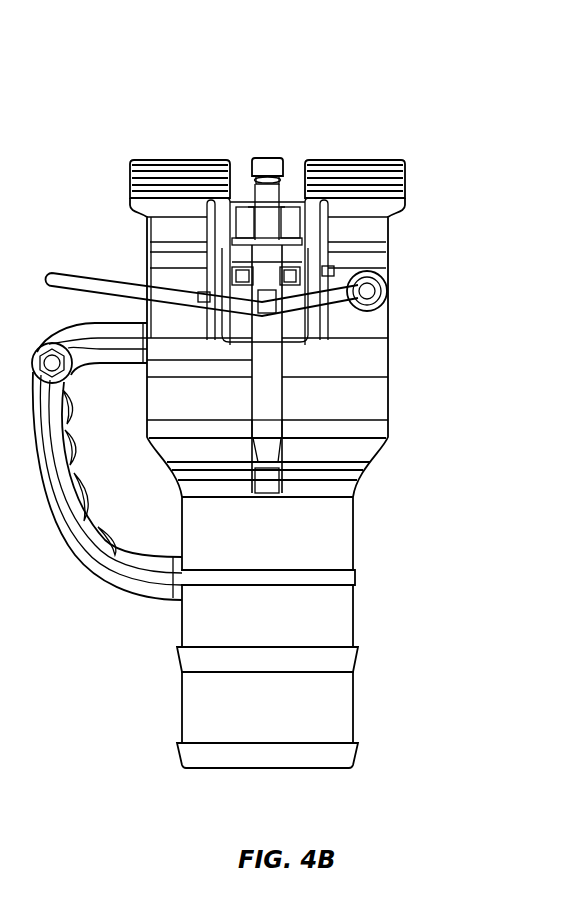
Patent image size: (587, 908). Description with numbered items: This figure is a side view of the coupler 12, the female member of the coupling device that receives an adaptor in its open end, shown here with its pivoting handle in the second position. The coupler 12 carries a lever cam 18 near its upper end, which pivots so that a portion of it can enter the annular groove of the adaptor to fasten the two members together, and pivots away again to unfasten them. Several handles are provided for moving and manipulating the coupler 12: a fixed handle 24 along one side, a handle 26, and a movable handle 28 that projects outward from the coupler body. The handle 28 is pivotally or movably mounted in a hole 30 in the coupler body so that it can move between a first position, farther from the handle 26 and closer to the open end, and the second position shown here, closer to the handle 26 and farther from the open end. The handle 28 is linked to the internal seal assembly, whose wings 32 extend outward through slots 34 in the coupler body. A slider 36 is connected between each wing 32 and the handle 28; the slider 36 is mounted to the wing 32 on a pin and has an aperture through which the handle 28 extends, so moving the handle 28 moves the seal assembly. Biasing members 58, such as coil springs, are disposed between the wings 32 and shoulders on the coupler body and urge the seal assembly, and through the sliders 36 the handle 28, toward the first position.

The coupler 12 is at (157, 105).
The lever cam 18 is at (277, 197).
The handle 24 is at (70, 540).
The handle 26 is at (48, 345).
The handle 28 is at (62, 272).
The hole 30 is at (389, 288).
The wing 32 is at (292, 272).
The slot 34 is at (243, 152).
The slider 36 is at (264, 315).
The biasing member 58 is at (205, 297).